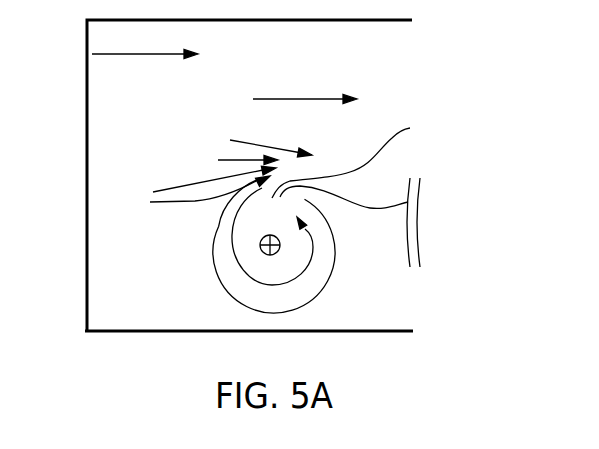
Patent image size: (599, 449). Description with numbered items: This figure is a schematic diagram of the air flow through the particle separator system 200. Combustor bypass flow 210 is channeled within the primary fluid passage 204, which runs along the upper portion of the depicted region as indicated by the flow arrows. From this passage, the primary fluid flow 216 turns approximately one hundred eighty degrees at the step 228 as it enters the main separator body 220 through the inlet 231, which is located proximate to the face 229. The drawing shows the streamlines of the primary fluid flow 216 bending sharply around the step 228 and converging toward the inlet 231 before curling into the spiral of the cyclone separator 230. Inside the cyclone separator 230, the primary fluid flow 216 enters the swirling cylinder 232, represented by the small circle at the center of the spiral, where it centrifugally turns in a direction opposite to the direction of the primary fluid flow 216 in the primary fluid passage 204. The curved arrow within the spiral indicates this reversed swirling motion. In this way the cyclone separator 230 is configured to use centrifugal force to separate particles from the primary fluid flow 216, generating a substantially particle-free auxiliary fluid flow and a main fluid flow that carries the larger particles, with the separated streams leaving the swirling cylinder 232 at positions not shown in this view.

The particle separator system 200 is at (484, 138).
The primary fluid passage 204 is at (305, 86).
The combustor bypass flow 210 is at (145, 43).
The primary fluid flow 216 is at (150, 242).
The main separator body 220 is at (148, 188).
The step 228 is at (218, 160).
The face 229 is at (188, 195).
The cyclone separator 230 is at (330, 283).
The inlet 231 is at (360, 159).
The swirling cylinder 232 is at (260, 252).